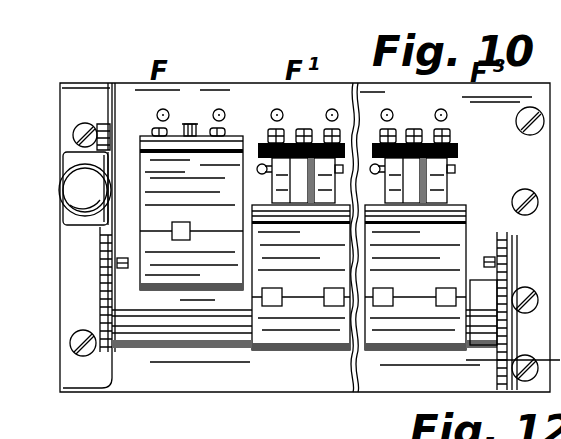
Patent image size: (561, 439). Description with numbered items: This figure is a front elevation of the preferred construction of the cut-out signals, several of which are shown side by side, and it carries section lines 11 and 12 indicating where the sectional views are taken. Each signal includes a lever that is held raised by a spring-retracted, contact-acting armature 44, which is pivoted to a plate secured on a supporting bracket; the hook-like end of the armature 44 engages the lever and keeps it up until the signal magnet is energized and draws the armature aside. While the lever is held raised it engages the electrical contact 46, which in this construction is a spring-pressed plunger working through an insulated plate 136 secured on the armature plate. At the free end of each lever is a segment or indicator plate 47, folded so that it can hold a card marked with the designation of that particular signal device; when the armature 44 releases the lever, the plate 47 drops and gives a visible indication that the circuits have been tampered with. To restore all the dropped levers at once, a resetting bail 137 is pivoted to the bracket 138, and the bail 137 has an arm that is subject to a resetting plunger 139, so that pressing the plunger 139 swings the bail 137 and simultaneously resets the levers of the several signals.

The section line 11- 11 is at (128, 112).
The section line 12- 12 is at (248, 112).
The armature 44 is at (270, 187).
The electrical contact 46 is at (302, 205).
The segment or indicator plate 47 is at (281, 207).
The insulated plate 136 is at (292, 131).
The resetting bail 137 is at (75, 336).
The bracket 138 is at (118, 263).
The resetting plunger 139 is at (80, 188).